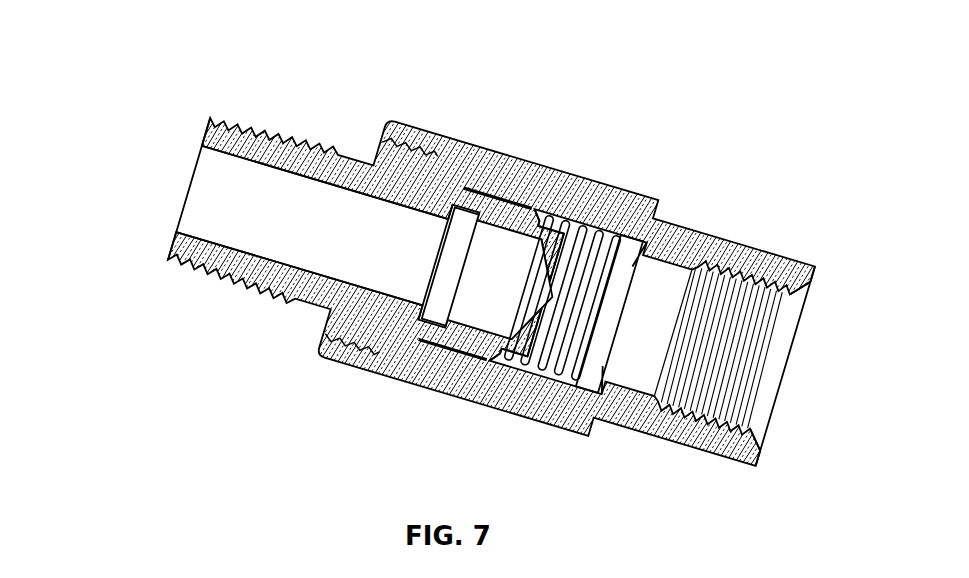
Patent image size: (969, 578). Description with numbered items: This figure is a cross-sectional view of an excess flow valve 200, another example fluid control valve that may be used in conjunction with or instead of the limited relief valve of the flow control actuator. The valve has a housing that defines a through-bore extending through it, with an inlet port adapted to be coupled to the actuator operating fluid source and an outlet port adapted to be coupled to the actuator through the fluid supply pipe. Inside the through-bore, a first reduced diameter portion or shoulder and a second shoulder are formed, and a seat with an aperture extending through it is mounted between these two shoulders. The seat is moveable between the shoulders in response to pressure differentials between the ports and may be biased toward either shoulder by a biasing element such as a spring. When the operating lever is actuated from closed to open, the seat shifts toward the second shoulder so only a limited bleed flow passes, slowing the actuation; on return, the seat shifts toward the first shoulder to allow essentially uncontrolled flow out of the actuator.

The excess flow valve 200 is at (110, 52).